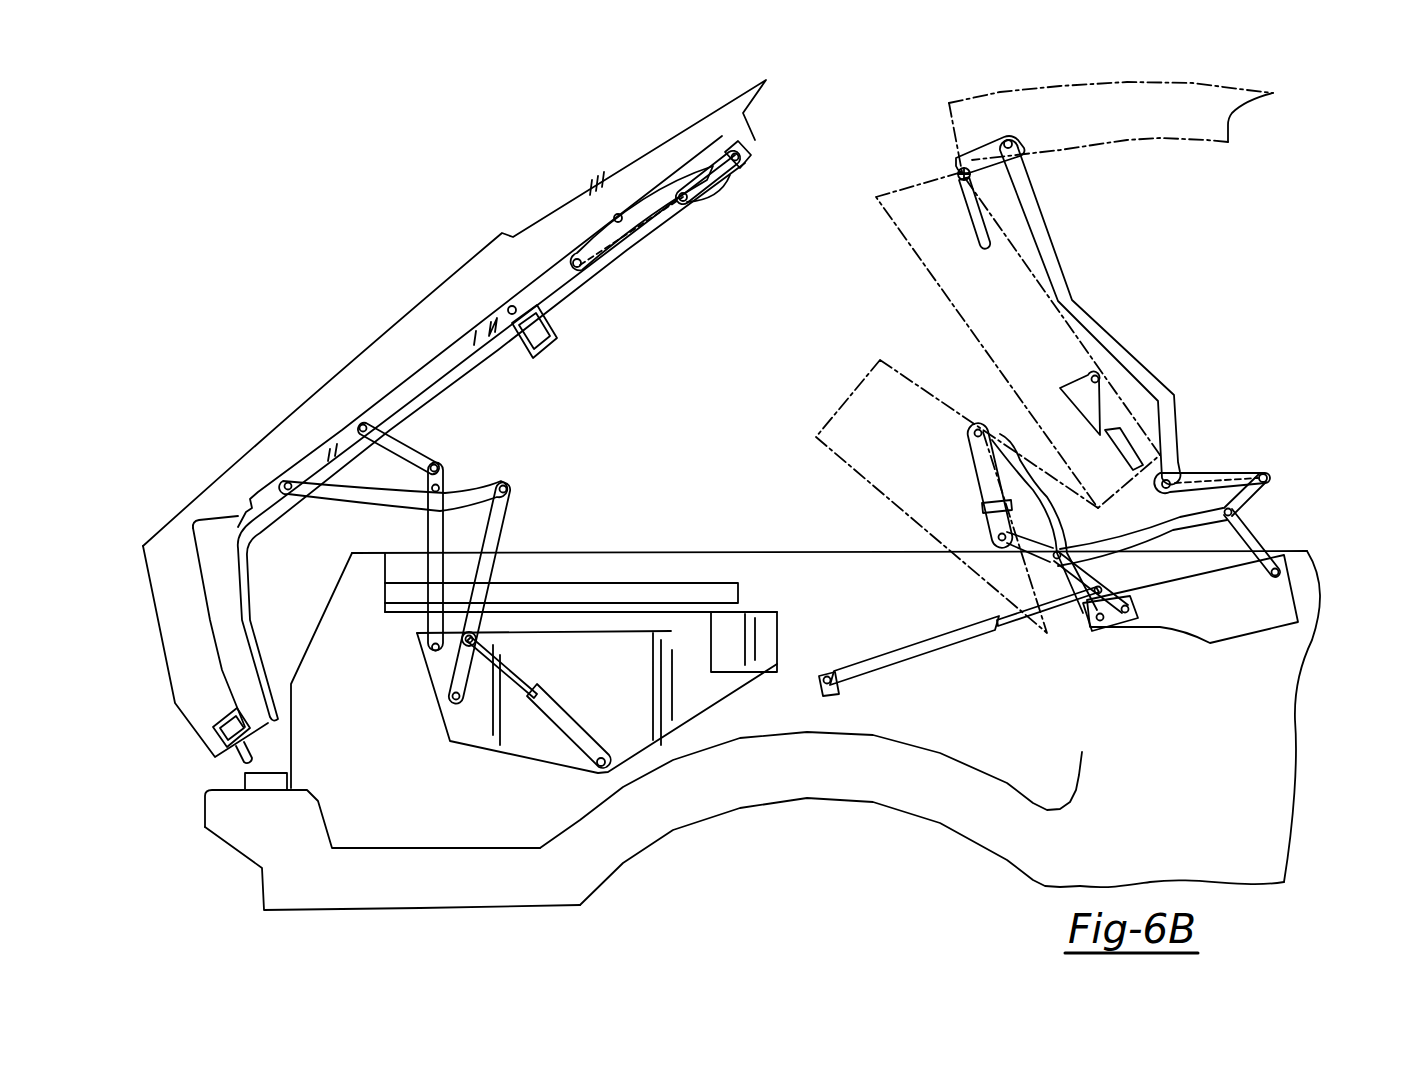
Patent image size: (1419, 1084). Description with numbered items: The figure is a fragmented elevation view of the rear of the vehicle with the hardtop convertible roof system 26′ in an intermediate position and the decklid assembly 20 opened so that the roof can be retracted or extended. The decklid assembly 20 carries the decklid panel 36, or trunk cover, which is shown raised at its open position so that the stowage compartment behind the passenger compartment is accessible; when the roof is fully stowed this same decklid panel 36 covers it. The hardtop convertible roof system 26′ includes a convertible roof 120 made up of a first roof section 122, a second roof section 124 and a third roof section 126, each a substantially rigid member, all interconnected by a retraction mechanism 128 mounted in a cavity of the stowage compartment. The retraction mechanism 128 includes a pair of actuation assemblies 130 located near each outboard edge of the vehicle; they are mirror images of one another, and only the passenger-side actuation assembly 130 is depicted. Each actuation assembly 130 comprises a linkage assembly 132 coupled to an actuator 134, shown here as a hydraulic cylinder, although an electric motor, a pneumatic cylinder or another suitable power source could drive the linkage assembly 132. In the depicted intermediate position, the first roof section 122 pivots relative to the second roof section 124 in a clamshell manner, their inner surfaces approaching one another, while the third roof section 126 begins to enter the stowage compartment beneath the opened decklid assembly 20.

The decklid assembly 20 is at (507, 199).
The decklid panel 36 is at (479, 260).
The hardtop convertible roof system 26′ is at (964, 93).
The convertible roof 120 is at (1270, 117).
The first roof section 122 is at (1106, 124).
The second roof section 124 is at (1010, 333).
The third roof section 126 is at (928, 478).
The retraction mechanism 128 is at (1231, 401).
The actuation assembly 130 is at (1202, 342).
The linkage assembly 132 is at (1280, 494).
The actuator 134 is at (888, 665).